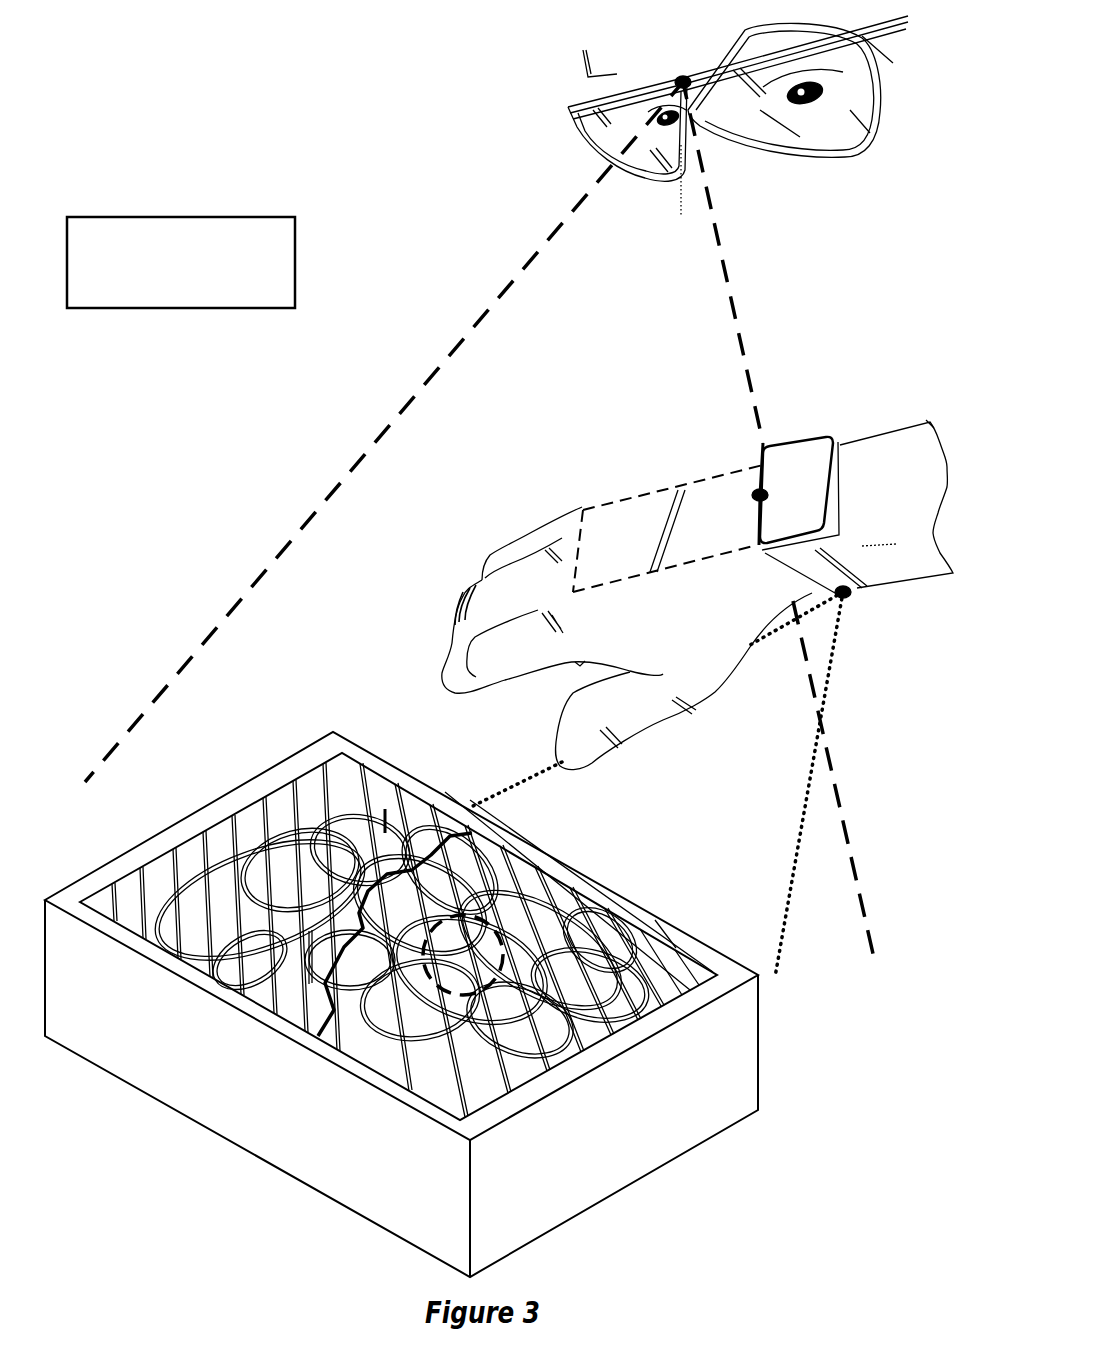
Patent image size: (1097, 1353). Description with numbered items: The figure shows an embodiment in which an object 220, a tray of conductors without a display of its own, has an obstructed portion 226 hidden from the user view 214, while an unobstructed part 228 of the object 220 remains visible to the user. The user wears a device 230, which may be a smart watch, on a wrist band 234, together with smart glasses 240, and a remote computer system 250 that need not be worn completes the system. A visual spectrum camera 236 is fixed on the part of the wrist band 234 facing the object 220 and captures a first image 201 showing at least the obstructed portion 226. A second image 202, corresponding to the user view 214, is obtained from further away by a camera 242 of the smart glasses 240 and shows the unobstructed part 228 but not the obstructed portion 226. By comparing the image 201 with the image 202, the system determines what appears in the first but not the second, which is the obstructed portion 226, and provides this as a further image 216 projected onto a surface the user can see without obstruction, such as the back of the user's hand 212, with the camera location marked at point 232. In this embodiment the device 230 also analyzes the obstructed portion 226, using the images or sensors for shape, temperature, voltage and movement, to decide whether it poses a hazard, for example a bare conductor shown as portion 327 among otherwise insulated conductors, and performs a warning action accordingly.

The first image 201 is at (755, 773).
The image 202 is at (678, 316).
The user's hand 212 is at (587, 497).
The user view 214 is at (458, 340).
The image 216 is at (637, 578).
The object 220 is at (198, 1157).
The obstructed portion 226 is at (537, 887).
The unobstructed part 228 is at (218, 840).
The device 230 is at (812, 435).
The camera reference point 232 is at (760, 492).
The wrist band 234 is at (795, 560).
The visual spectrum camera 236 is at (843, 600).
The smart glasses 240 is at (570, 133).
The camera 242 is at (683, 78).
The remote computer system 250 is at (257, 302).
The portion 327 is at (663, 550).